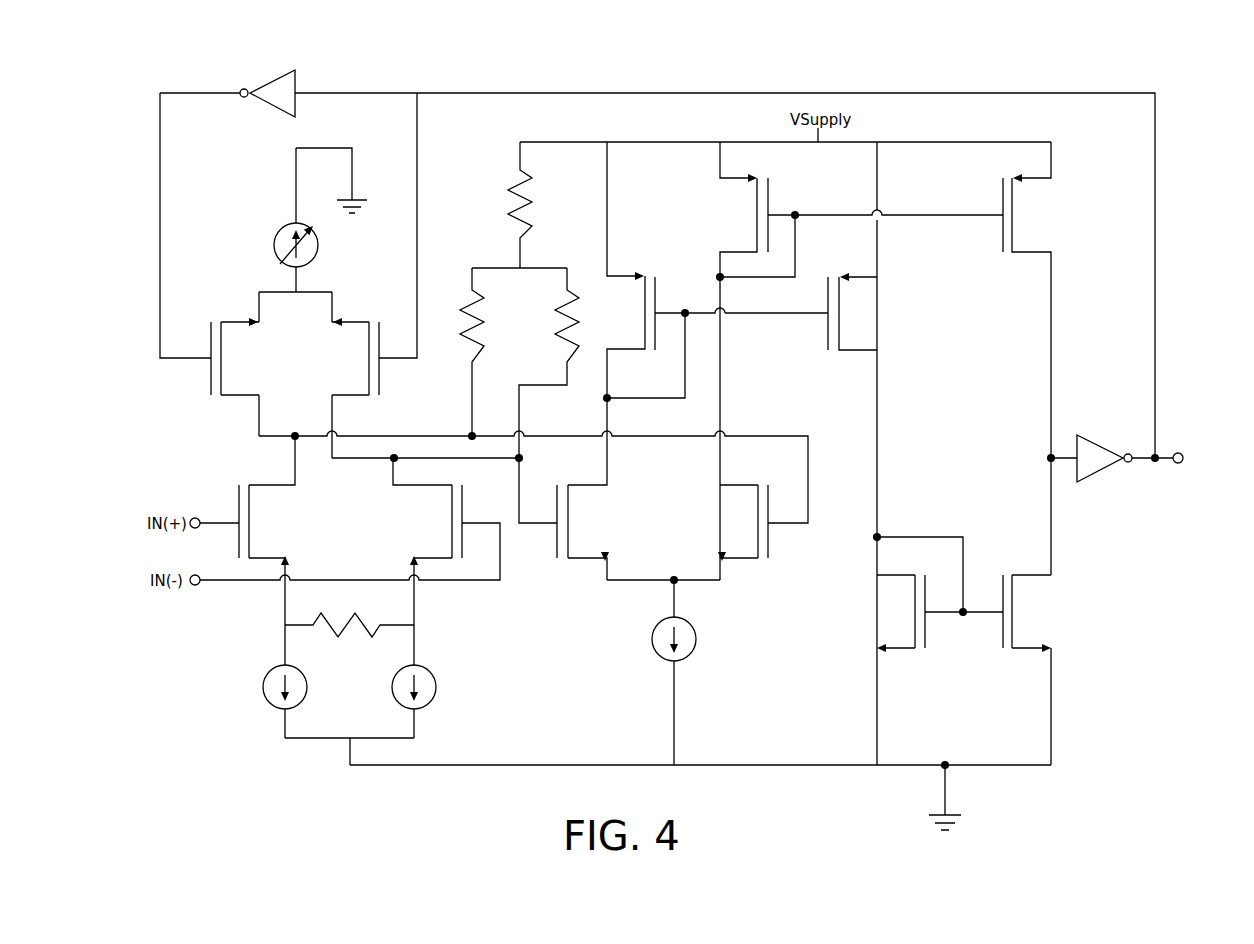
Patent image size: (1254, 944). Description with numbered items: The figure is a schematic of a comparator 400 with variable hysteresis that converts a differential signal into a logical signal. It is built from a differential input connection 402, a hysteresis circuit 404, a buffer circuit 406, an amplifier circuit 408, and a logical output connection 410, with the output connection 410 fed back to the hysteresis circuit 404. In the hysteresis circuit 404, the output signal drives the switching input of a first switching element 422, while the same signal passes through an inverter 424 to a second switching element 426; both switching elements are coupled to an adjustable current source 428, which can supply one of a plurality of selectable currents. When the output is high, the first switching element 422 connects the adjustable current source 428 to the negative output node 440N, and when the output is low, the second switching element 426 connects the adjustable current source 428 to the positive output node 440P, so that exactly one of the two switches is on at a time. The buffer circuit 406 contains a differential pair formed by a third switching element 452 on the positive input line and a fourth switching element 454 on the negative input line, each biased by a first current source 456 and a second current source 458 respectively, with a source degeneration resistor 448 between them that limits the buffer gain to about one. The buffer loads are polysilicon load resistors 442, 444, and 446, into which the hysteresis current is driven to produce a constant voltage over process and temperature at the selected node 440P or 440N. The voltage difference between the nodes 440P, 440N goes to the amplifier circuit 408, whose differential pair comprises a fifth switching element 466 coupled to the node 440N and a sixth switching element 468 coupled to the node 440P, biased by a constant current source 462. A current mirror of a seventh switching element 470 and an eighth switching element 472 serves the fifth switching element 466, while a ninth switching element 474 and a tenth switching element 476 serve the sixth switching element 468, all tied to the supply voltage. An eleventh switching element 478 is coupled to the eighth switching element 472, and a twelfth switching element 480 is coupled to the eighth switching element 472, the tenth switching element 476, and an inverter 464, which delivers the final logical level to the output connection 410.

The comparator 400 is at (1116, 688).
The differential input connection 402 is at (196, 603).
The hysteresis circuit 404 is at (237, 410).
The buffer circuit 406 is at (525, 572).
The amplifier circuit 408 is at (596, 690).
The logical output connection 410 is at (1175, 482).
The first switching element 422 is at (386, 345).
The inverter 424 is at (258, 88).
The second switching element 426 is at (212, 345).
The adjustable current source 428 is at (276, 238).
The positive output node 440P is at (470, 432).
The negative output node 440N is at (524, 459).
The load resistor 442 is at (480, 326).
The load resistor 444 is at (562, 346).
The load resistor 446 is at (532, 218).
The source degeneration resistor 448 is at (378, 632).
The third switching element 452 is at (272, 487).
The fourth switching element 454 is at (420, 487).
The first current source 456 is at (264, 688).
The second current source 458 is at (393, 687).
The constant current source 462 is at (696, 645).
The inverter 464 is at (1090, 435).
The fifth switching element 466 is at (587, 488).
The sixth switching element 468 is at (770, 545).
The seventh switching element 470 is at (657, 290).
The eighth switching element 472 is at (828, 340).
The ninth switching element 474 is at (770, 191).
The tenth switching element 476 is at (1003, 250).
The eleventh switching element 478 is at (927, 648).
The twelfth switching element 480 is at (1002, 648).